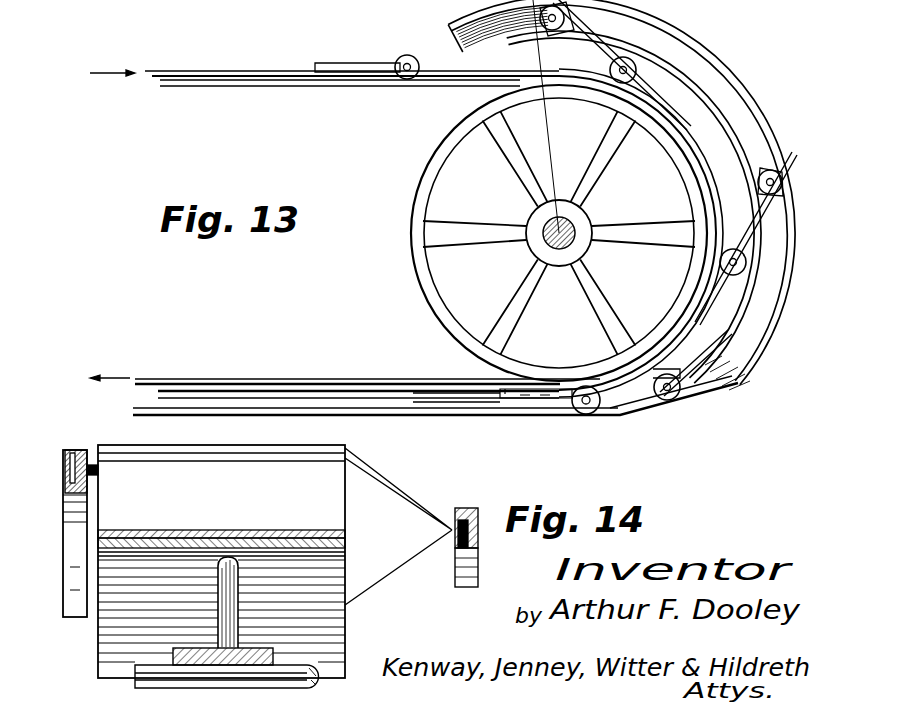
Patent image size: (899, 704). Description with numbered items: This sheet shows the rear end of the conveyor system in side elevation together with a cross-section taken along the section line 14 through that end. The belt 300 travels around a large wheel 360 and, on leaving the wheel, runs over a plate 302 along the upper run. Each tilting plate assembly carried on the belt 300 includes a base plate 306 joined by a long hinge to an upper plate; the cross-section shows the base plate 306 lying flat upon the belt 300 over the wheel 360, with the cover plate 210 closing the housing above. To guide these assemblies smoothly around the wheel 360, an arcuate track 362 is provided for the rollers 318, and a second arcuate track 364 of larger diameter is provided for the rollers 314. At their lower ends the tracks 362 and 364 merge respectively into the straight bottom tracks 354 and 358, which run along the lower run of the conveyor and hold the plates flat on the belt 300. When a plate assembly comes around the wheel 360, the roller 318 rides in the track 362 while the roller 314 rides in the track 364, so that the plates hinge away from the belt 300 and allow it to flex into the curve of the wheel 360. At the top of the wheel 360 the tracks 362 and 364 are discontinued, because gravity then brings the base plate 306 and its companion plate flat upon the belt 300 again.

In FIG. 13, the section line 14 is at (545, 236).
In FIG. 13, the belt 300 is at (243, 58).
In FIG. 14, the belt 300 is at (316, 535).
In FIG. 13, the plate 302 is at (250, 84).
In FIG. 14, the base plate 306 is at (232, 446).
In FIG. 14, the housing cover plate 210 is at (313, 460).
In FIG. 13, the rollers 314 is at (782, 166).
In FIG. 14, the rollers 314 is at (88, 458).
In FIG. 13, the rollers 318 is at (425, 50).
In FIG. 14, the rollers 318 is at (455, 522).
In FIG. 13, the straight track 354 is at (473, 413).
In FIG. 13, the straight track 358 is at (412, 400).
In FIG. 13, the wheel 360 is at (443, 150).
In FIG. 14, the wheel 360 is at (340, 566).
In FIG. 13, the arcuate track 362 is at (682, 90).
In FIG. 14, the arcuate track 362 is at (463, 572).
In FIG. 13, the arcuate track 364 is at (748, 100).
In FIG. 14, the arcuate track 364 is at (70, 604).